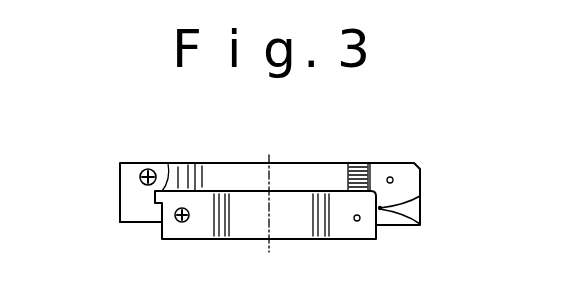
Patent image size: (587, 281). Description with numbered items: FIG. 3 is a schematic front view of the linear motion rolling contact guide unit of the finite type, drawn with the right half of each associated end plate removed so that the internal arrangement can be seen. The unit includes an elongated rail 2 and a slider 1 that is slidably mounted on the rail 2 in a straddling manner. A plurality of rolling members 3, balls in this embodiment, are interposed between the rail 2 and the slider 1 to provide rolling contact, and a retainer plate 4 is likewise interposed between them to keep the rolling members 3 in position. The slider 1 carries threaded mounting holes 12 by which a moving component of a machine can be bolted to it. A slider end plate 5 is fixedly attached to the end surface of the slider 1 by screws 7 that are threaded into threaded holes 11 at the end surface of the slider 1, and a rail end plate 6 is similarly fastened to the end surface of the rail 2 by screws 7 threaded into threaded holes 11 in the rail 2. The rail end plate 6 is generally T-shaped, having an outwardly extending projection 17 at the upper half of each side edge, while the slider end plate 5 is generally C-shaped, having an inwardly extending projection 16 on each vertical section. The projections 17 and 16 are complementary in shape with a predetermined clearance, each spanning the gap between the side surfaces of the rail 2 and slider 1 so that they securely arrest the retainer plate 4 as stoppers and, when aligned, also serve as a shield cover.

The slider 1 is at (410, 172).
The rail 2 is at (374, 230).
The rolling members 3 is at (383, 207).
The retainer plate 4 is at (420, 220).
The slider end plate 5 is at (120, 193).
The rail end plate 6 is at (198, 228).
The screws 7 is at (147, 168).
The threaded holes 11 is at (390, 177).
The mounting holes 12 is at (358, 164).
The inwardly extending projection 16 is at (122, 213).
The outwardly extending projection 17 is at (169, 163).